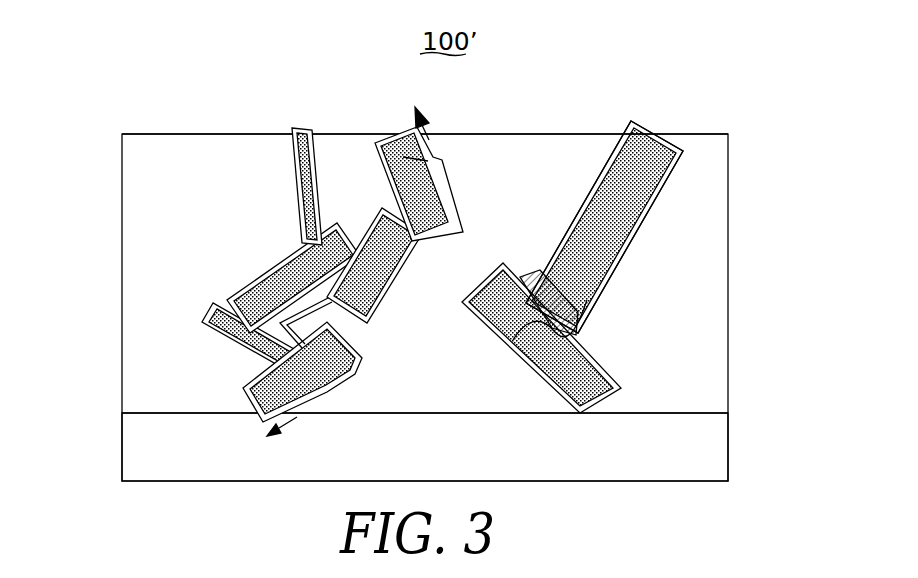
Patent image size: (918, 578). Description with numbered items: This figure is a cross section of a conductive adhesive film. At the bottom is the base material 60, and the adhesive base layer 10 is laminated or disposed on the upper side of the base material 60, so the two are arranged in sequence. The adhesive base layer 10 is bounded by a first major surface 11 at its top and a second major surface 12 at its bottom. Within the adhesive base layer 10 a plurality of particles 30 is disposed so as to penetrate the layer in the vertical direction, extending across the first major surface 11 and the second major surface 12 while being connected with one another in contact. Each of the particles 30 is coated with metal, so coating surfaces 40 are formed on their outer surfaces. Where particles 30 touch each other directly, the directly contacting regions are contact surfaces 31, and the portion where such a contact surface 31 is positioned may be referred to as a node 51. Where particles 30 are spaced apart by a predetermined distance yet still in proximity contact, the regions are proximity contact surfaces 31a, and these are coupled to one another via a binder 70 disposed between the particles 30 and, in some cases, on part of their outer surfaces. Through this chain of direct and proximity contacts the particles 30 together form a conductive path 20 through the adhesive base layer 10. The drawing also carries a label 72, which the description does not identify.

The adhesive base layer 10 is at (140, 350).
The first major surface 11 is at (170, 133).
The second major surface 12 is at (148, 416).
The conductive path 20 is at (432, 137).
The particles 30 is at (652, 150).
The contact surfaces 31 is at (280, 351).
The proximity contact surfaces 31a is at (570, 294).
The coating surfaces 40 is at (658, 194).
The node 51 is at (288, 222).
The base material 60 is at (702, 445).
The binder 70 is at (577, 322).
The thin rod 72 is at (300, 203).